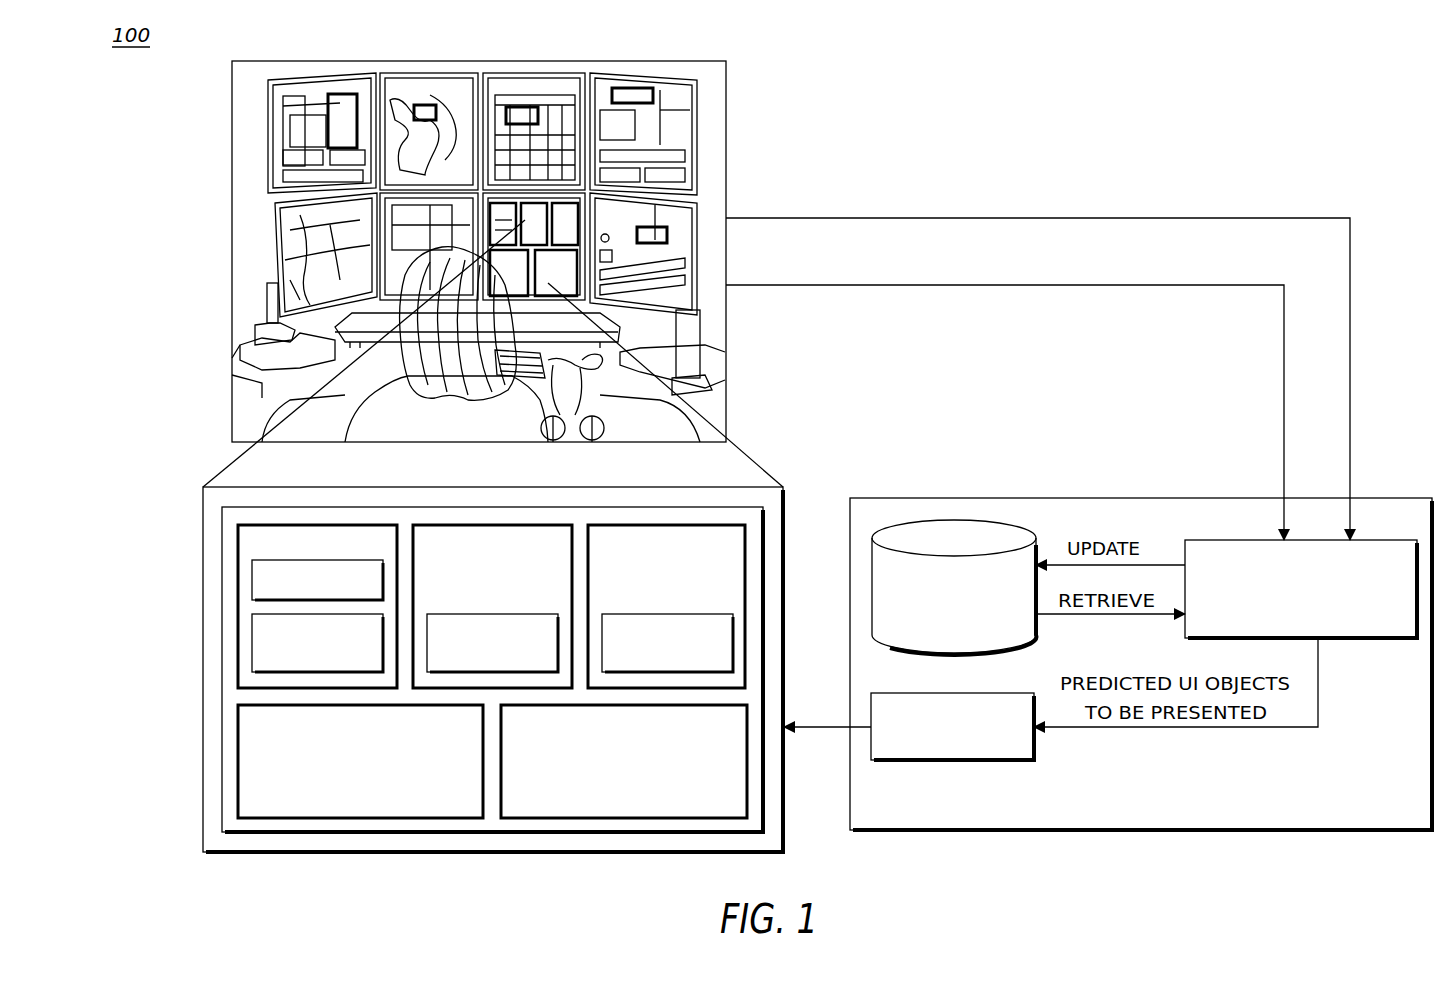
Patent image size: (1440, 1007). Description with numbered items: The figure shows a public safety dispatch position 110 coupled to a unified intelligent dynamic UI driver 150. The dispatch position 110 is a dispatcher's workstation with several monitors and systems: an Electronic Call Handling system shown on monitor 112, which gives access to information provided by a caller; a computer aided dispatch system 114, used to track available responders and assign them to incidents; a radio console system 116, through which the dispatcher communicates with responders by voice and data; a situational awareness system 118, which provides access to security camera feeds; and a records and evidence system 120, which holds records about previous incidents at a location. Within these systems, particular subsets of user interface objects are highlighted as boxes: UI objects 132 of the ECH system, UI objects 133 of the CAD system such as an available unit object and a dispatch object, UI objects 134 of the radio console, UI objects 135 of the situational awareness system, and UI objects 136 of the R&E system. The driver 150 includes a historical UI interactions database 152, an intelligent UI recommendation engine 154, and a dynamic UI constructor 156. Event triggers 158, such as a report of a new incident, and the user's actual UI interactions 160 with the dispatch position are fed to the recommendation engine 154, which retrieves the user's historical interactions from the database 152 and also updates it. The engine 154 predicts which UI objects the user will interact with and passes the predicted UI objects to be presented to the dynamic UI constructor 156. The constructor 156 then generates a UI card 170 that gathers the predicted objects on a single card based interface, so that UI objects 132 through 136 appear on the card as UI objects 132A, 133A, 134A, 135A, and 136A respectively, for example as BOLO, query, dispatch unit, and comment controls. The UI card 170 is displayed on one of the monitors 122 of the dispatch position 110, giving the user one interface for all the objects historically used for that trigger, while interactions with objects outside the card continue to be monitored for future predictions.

The dispatch position 110 is at (726, 78).
The ECH system monitor 112 is at (297, 108).
The computer aided dispatch system 114 is at (522, 90).
The radio console system 116 is at (655, 122).
The situational awareness system 118 is at (465, 98).
The records and evidence system 120 is at (668, 270).
The monitor 122 is at (530, 258).
The UI objects of the ECH system 132 is at (343, 92).
The UI objects of the CAD system 133 is at (530, 110).
The UI objects of the radio console system 134 is at (622, 92).
The UI objects of the situational awareness system 135 is at (420, 105).
The UI objects of the R&E system 136 is at (678, 236).
The UI card copy of ECH UI objects 132A is at (625, 525).
The UI card copy of CAD UI objects 133A is at (485, 525).
The UI card copy of radio console UI objects 134A is at (260, 768).
The UI card copy of situational awareness UI objects 135A is at (300, 525).
The UI card copy of R&E UI objects 136A is at (725, 775).
The unified intelligent dynamic UI driver 150 is at (1150, 498).
The historical UI interactions database 152 is at (952, 519).
The intelligent UI recommendation engine 154 is at (1348, 640).
The dynamic UI constructor 156 is at (930, 762).
The event triggers 158 is at (923, 218).
The UI interactions 160 is at (920, 285).
The UI card 170 is at (222, 598).